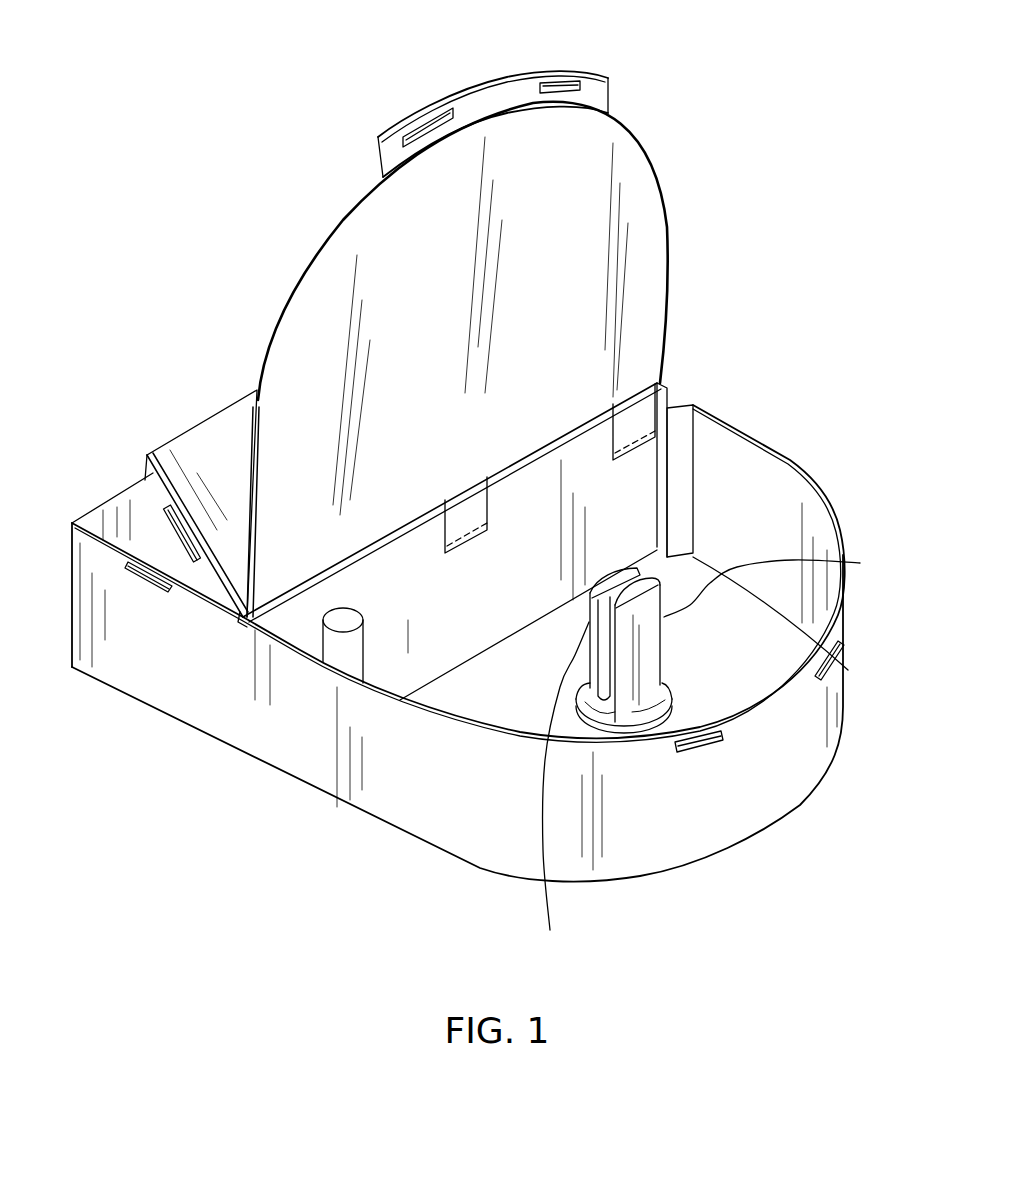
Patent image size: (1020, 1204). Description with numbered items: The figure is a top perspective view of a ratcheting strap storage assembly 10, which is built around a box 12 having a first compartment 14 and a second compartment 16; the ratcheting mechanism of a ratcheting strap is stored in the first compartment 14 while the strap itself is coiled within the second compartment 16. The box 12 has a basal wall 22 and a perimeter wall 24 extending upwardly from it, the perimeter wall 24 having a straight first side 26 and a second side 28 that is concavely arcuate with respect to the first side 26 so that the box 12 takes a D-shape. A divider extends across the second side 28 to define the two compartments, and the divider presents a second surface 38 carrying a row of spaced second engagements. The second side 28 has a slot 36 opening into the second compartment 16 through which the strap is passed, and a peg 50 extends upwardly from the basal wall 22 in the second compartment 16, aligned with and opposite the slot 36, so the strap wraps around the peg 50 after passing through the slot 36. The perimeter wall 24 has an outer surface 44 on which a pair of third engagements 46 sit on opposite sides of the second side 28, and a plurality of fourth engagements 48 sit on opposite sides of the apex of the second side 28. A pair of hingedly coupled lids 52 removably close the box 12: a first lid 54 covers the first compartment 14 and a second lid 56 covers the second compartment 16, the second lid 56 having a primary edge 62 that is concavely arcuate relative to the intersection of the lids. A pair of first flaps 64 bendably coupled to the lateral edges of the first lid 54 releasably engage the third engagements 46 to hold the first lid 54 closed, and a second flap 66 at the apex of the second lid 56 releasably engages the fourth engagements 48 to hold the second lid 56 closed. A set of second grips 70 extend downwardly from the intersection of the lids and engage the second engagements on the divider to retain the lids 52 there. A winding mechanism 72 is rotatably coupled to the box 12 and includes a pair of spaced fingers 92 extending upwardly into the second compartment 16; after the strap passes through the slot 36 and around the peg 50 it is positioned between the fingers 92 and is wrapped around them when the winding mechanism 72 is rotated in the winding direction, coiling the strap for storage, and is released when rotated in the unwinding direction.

The ratcheting strap storage assembly 10 is at (135, 147).
The box 12 is at (68, 532).
The first compartment 14 is at (113, 490).
The second compartment 16 is at (767, 462).
The basal wall 22 is at (727, 647).
The perimeter wall 24 is at (713, 820).
The first side 26 is at (117, 523).
The second side 28 is at (628, 840).
The slot 36 is at (684, 380).
The second surface 38 is at (592, 452).
The outer surface 44 is at (262, 716).
The third engagements 46 is at (140, 596).
The fourth engagements 48 is at (832, 675).
The peg 50 is at (333, 646).
The lids 52 is at (193, 355).
The first lid 54 is at (178, 440).
The second lid 56 is at (343, 220).
The primary edge 62 is at (296, 287).
The first flaps 64 is at (190, 565).
The second flap 66 is at (513, 70).
The second grips 70 is at (690, 406).
The winding mechanism 72 is at (535, 665).
The fingers 92 is at (724, 759).